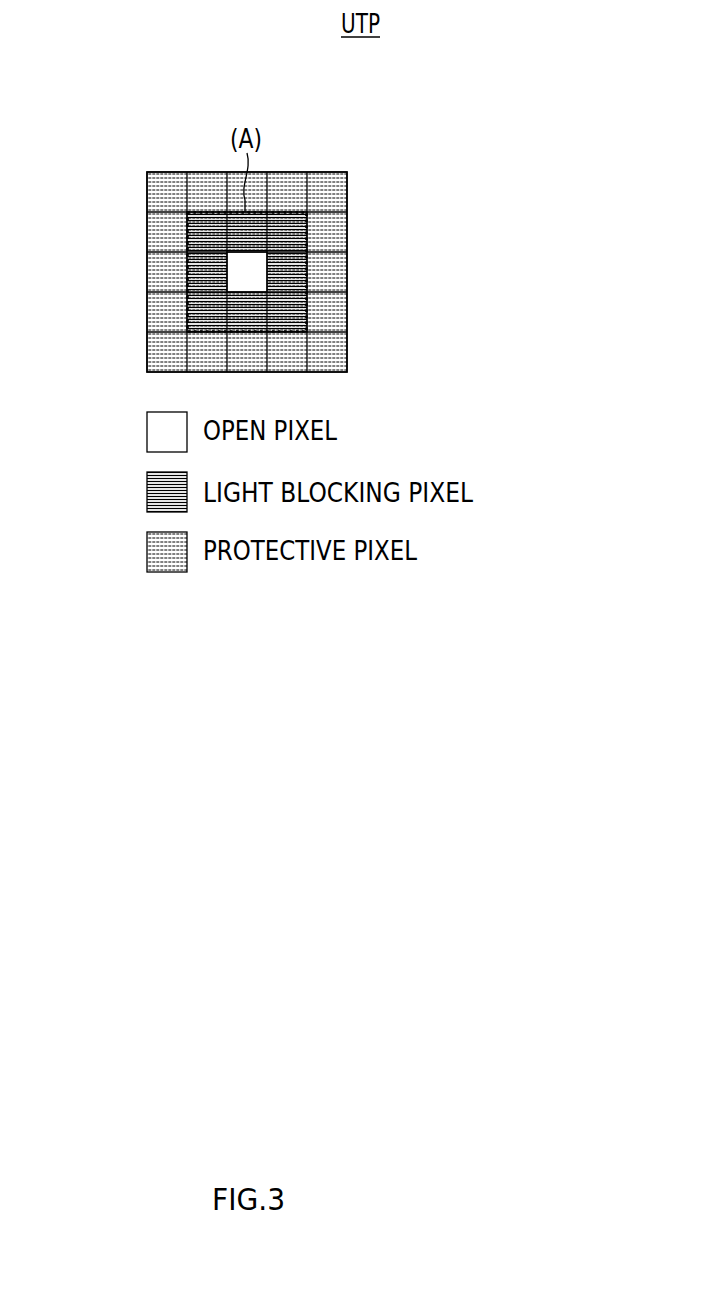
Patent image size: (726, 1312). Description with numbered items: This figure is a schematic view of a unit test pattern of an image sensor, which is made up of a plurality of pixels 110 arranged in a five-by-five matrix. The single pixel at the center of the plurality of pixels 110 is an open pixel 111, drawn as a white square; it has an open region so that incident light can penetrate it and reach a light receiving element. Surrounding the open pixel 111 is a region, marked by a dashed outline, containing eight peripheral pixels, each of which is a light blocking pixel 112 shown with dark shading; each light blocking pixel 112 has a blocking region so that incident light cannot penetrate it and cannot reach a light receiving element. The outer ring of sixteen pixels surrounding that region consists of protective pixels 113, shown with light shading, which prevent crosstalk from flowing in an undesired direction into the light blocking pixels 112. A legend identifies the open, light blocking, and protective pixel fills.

The pixels 110 is at (257, 272).
The open pixel 111 is at (247, 274).
The light blocking pixel 112 is at (208, 312).
The protective pixel 113 is at (165, 350).